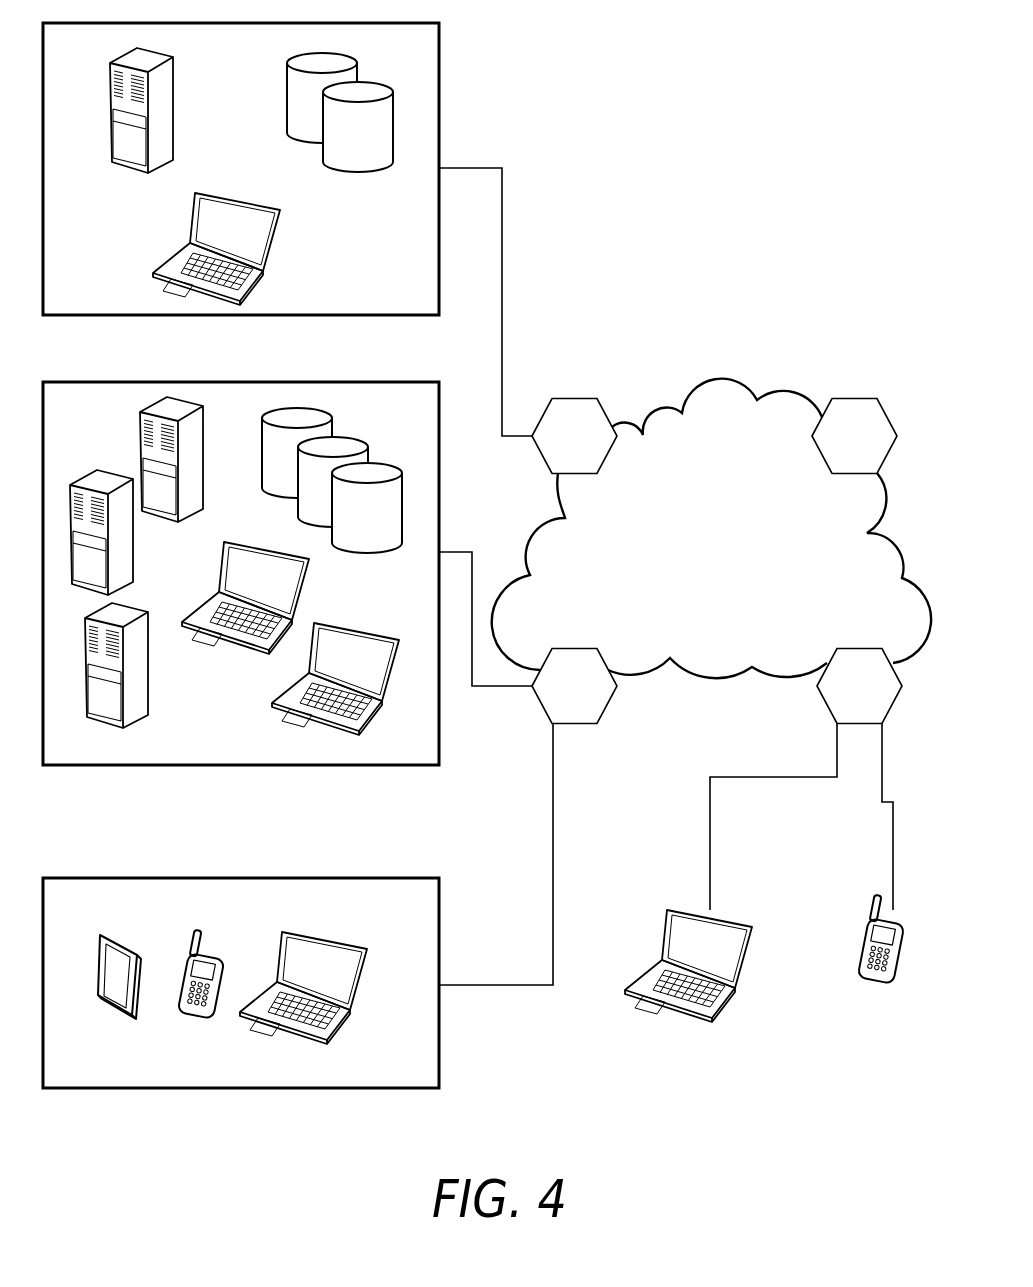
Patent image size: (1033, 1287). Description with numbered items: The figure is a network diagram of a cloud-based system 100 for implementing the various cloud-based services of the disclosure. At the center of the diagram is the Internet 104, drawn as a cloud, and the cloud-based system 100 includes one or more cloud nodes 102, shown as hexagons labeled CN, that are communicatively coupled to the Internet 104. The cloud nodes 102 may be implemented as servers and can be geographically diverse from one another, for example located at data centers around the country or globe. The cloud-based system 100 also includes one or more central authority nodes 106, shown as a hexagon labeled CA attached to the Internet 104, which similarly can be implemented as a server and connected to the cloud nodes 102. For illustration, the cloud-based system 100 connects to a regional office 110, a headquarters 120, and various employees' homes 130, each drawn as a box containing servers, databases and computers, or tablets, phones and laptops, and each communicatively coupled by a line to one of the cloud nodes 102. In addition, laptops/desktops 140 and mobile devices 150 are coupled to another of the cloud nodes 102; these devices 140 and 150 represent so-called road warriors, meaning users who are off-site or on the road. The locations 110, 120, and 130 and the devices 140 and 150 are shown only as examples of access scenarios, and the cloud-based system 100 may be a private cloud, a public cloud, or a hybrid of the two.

The cloud-based system 100 is at (695, 97).
The cloud nodes 102 is at (570, 398).
The Internet 104 is at (740, 382).
The central authority nodes 106 is at (855, 398).
The regional office 110 is at (440, 73).
The headquarters 120 is at (440, 462).
The employee's homes 130 is at (439, 1027).
The laptops/desktops 140 is at (733, 922).
The mobile devices 150 is at (860, 972).